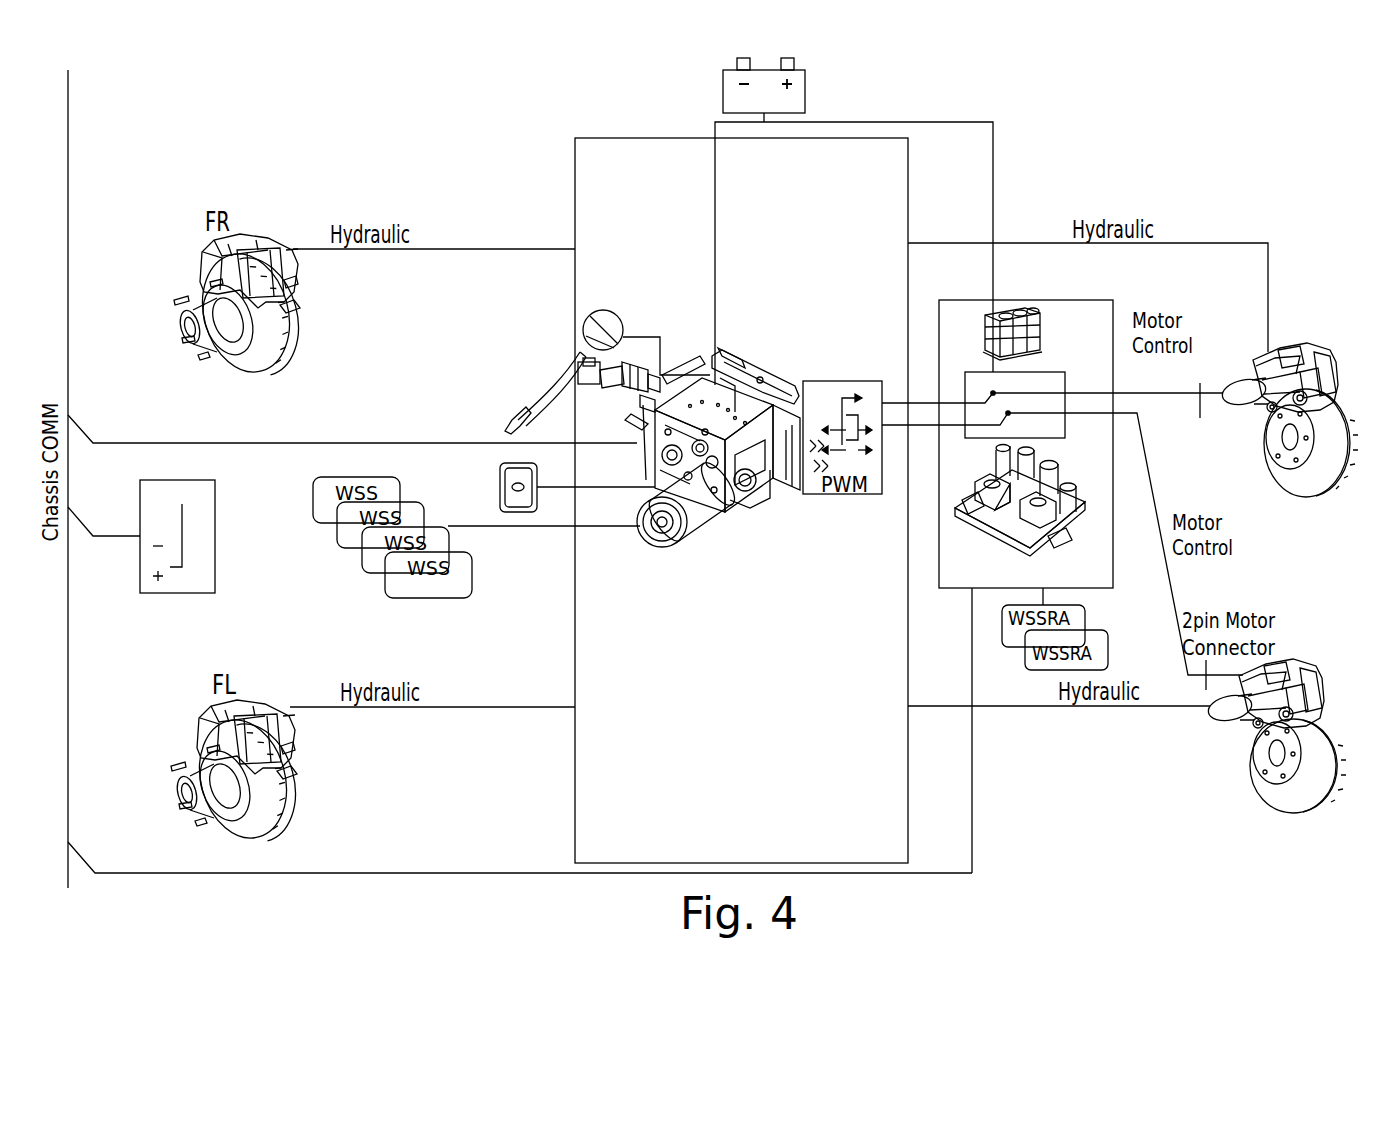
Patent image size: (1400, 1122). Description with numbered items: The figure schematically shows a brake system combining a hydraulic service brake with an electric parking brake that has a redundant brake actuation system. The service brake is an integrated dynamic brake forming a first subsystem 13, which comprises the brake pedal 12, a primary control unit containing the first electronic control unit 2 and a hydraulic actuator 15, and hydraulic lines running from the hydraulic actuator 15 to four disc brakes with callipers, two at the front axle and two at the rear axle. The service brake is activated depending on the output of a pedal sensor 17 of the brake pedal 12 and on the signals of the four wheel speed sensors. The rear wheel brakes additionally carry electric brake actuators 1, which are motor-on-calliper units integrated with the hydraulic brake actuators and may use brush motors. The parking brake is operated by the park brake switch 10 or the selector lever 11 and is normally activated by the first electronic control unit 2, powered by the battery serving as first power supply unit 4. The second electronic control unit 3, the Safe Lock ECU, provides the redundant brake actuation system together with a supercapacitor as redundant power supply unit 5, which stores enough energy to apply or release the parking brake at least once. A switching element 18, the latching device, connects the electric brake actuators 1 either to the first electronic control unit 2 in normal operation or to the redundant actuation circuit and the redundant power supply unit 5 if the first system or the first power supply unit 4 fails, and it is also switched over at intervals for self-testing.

The electric brake actuator 1 is at (1306, 322).
The first electronic control unit 2 is at (146, 451).
The second electronic control unit 3 is at (1030, 286).
The first power supply unit 4 is at (805, 88).
The redundant power supply unit 5 is at (1044, 338).
The park brake switch 10 is at (500, 487).
The selector lever 11 is at (215, 576).
The brake pedal 12 is at (561, 384).
The first subsystem 13 is at (924, 725).
The hydraulic actuator 15 is at (698, 542).
The pedal sensor 17 is at (618, 312).
The switching element 18 is at (1065, 424).